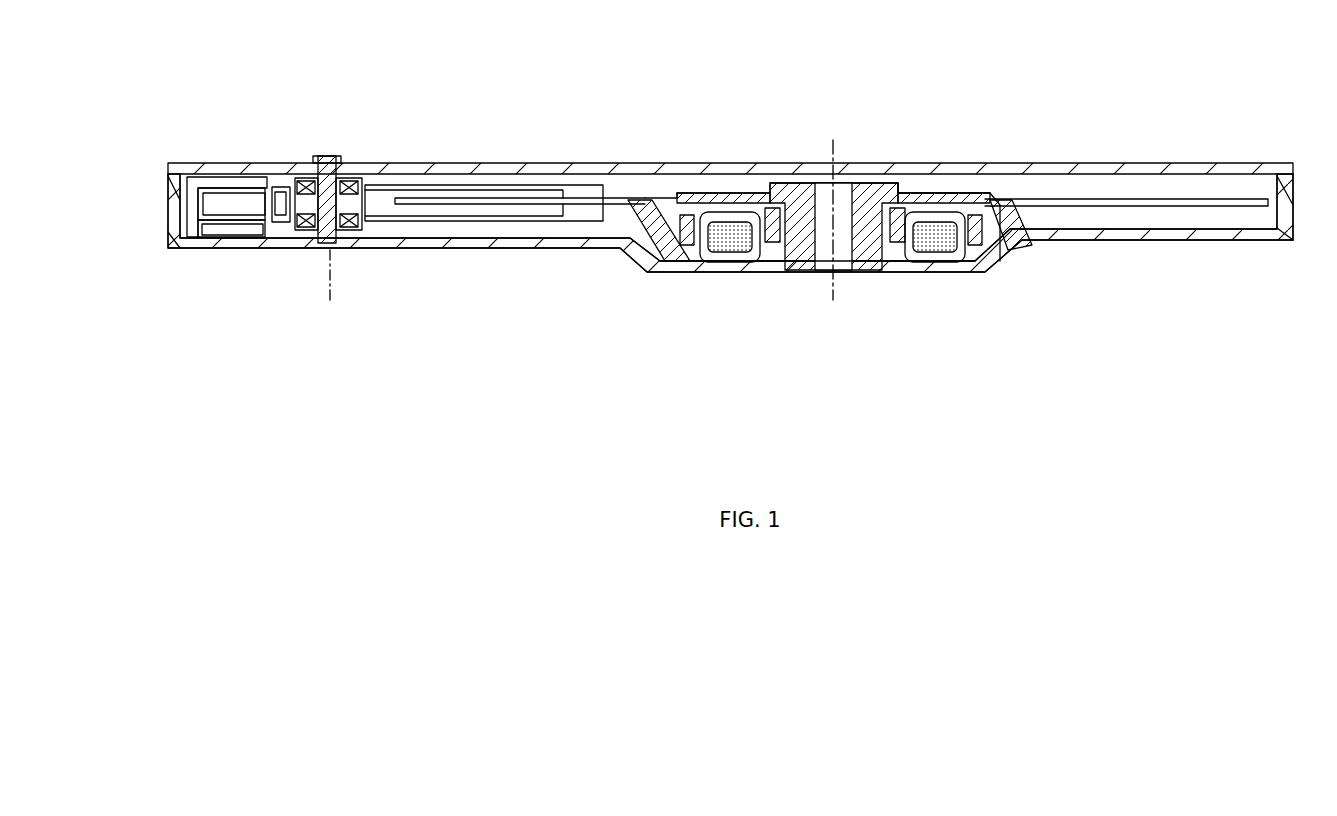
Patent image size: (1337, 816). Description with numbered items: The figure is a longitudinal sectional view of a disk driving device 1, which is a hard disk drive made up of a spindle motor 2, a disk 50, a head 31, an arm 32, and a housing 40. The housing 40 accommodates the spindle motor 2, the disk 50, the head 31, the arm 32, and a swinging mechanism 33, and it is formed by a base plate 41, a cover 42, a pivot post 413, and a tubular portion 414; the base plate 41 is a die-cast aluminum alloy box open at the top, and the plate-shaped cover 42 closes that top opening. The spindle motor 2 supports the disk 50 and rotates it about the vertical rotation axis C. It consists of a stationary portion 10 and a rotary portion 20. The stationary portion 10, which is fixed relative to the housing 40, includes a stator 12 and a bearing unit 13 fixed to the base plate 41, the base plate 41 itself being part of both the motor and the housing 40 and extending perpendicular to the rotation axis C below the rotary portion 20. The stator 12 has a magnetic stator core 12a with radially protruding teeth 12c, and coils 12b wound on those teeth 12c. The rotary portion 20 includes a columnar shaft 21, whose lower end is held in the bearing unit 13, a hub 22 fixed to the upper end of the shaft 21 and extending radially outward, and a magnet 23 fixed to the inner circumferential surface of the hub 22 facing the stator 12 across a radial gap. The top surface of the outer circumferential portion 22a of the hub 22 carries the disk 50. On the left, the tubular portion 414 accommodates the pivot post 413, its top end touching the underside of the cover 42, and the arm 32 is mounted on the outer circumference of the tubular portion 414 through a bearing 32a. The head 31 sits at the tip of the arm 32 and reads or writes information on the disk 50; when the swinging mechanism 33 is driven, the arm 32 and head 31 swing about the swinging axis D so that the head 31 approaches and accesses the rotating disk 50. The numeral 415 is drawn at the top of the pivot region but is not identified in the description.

The disk driving device 1 is at (1203, 78).
The spindle motor 2 is at (826, 320).
The stationary portion 10 is at (791, 301).
The stator 12 is at (1013, 341).
The stator core 12a is at (967, 270).
The coils 12b is at (937, 270).
The teeth 12c is at (703, 270).
The bearing unit 13 is at (872, 270).
The rotary portion 20 is at (703, 186).
The shaft 21 is at (846, 177).
The hub 22 is at (960, 180).
The outer circumferential portion 22a is at (645, 192).
The magnet 23 is at (1012, 177).
The head 31 is at (577, 207).
The arm 32 is at (512, 207).
The bearing 32a is at (366, 166).
The swinging mechanism 33 is at (240, 167).
The housing 40 is at (1333, 94).
The base plate 41 is at (1298, 238).
The cover 42 is at (1228, 165).
The disk 50 is at (1078, 207).
The pivot post 413 is at (333, 243).
The tubular portion 414 is at (346, 165).
The pin head 415 is at (318, 160).
The rotation axis C is at (828, 152).
The swinging axis D is at (318, 272).